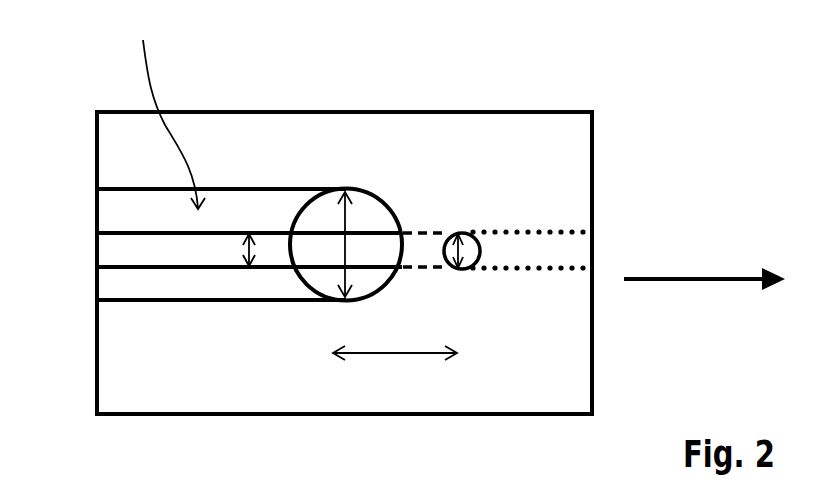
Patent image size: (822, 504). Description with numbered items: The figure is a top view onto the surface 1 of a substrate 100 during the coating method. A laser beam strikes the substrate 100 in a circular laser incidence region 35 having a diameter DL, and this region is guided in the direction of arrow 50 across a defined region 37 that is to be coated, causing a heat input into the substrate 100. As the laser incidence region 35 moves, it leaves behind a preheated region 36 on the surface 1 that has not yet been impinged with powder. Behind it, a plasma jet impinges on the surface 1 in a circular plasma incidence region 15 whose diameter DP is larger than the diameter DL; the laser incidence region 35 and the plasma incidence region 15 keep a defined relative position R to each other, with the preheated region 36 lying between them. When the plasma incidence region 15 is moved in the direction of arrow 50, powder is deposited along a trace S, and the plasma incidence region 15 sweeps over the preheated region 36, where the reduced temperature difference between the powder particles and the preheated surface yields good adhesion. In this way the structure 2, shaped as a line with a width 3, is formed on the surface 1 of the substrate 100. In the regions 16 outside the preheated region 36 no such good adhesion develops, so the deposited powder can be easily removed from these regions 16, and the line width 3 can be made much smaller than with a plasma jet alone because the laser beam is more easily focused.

The substrate 100 is at (594, 177).
The regions outside the preheated region 16 is at (106, 206).
The structure 2 is at (145, 254).
The trace of the plasma incidence region S is at (171, 111).
The plasma incidence region 15 is at (302, 200).
The diameter of the plasma incidence region DP is at (350, 206).
The line width 3 is at (257, 250).
The preheated region 36 is at (428, 232).
The laser incidence region 35 is at (457, 233).
The diameter of the laser incidence region DL is at (472, 266).
The defined region to be coated 37 is at (537, 241).
The relative position R is at (410, 354).
The arrow 50 is at (708, 277).
The surface 1 is at (544, 349).